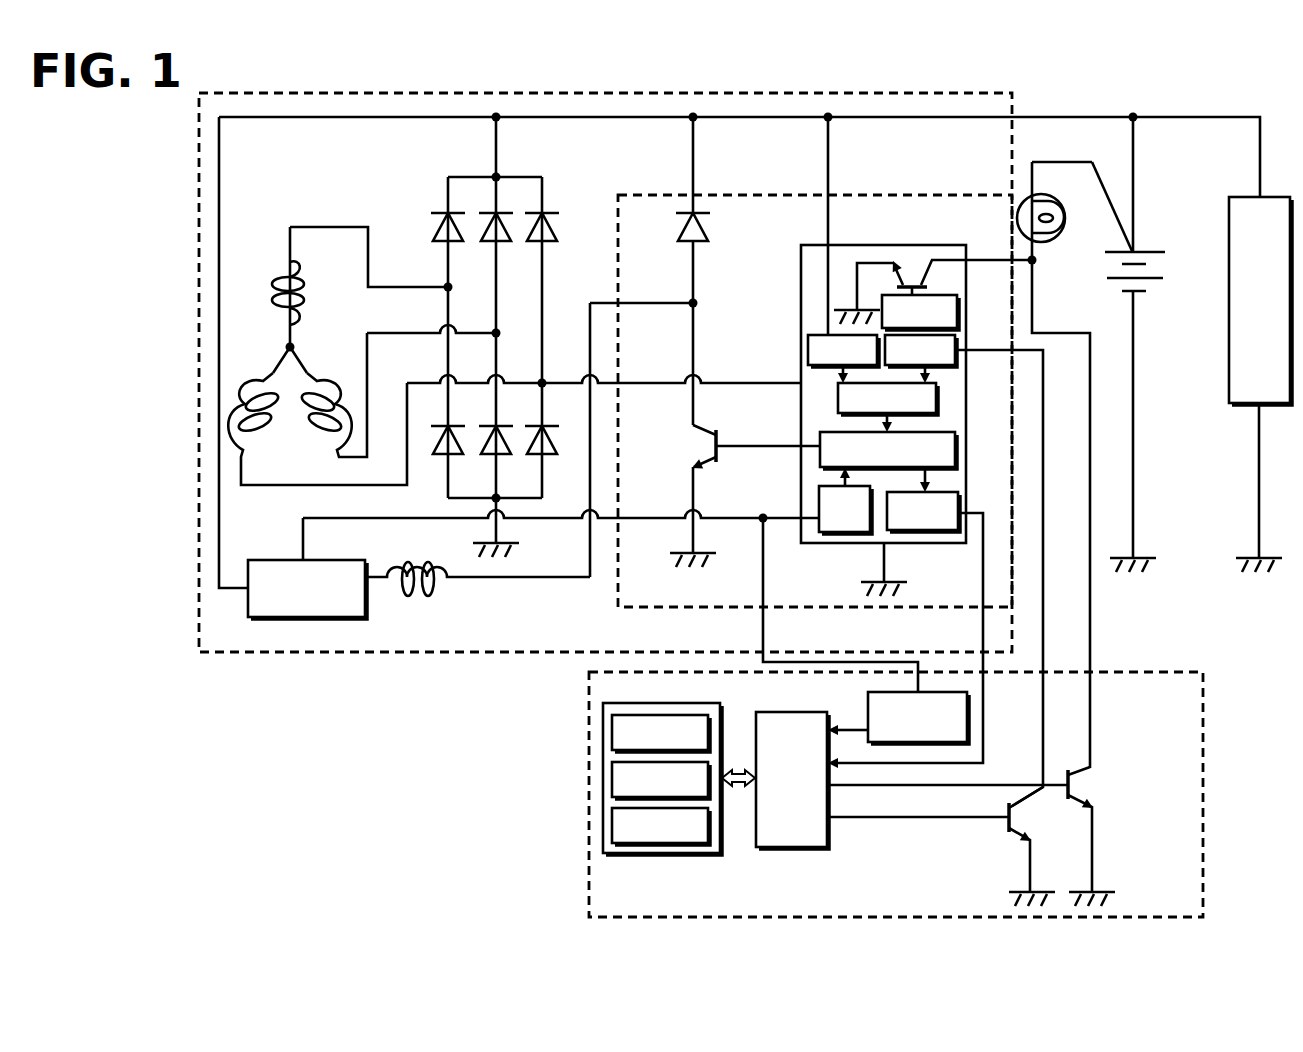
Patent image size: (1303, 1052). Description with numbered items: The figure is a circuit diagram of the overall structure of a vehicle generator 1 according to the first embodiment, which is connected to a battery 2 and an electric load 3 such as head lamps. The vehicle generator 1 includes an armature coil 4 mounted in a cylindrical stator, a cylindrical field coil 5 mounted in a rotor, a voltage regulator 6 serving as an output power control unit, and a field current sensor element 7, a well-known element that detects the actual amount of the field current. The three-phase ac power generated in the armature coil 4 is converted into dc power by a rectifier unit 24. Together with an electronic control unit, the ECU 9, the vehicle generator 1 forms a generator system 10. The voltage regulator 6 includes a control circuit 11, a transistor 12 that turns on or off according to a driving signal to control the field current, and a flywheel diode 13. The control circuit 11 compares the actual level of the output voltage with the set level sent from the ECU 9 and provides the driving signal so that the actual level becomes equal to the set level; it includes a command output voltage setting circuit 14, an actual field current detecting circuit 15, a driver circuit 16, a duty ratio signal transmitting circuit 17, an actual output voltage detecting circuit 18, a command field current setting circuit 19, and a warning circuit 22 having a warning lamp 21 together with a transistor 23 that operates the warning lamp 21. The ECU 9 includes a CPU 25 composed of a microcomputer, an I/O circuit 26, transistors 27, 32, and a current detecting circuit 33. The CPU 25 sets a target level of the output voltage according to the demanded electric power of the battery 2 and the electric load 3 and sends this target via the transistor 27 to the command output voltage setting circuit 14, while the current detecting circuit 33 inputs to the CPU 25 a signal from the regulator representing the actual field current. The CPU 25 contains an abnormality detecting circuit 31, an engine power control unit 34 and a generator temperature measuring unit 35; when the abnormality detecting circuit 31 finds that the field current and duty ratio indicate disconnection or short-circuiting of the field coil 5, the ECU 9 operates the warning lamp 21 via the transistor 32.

The vehicle generator 1 is at (445, 90).
The battery 2 is at (1153, 250).
The electric load 3 is at (1249, 196).
The armature coil 4 is at (280, 282).
The field coil 5 is at (432, 580).
The voltage regulator 6 is at (880, 189).
The field current sensor element 7 is at (272, 560).
The electronic control unit (ECU) 9 is at (1212, 744).
The generator system 10 is at (1042, 84).
The control circuit 11 is at (797, 291).
The transistor 12 is at (720, 452).
The flywheel diode 13 is at (707, 230).
The command output voltage setting circuit 14 is at (952, 366).
The actual field current detecting circuit 15 is at (845, 534).
The driver circuit 16 is at (820, 443).
The duty ratio signal transmitting circuit 17 is at (952, 492).
The actual output voltage detecting circuit 18 is at (807, 350).
The command field current setting circuit 19 is at (937, 398).
The warning lamp 21 is at (1049, 243).
The warning circuit 22 is at (957, 319).
The transistor 23 is at (905, 282).
The rectifier unit 24 is at (541, 204).
The CPU 25 is at (633, 805).
The I/O circuit 26 is at (785, 849).
The transistor 27 is at (1012, 838).
The abnormality detecting circuit 31 is at (612, 734).
The transistor 32 is at (1072, 802).
The current detecting circuit 33 is at (868, 707).
The engine power control unit 34 is at (612, 780).
The generator temperature measuring unit 35 is at (612, 826).